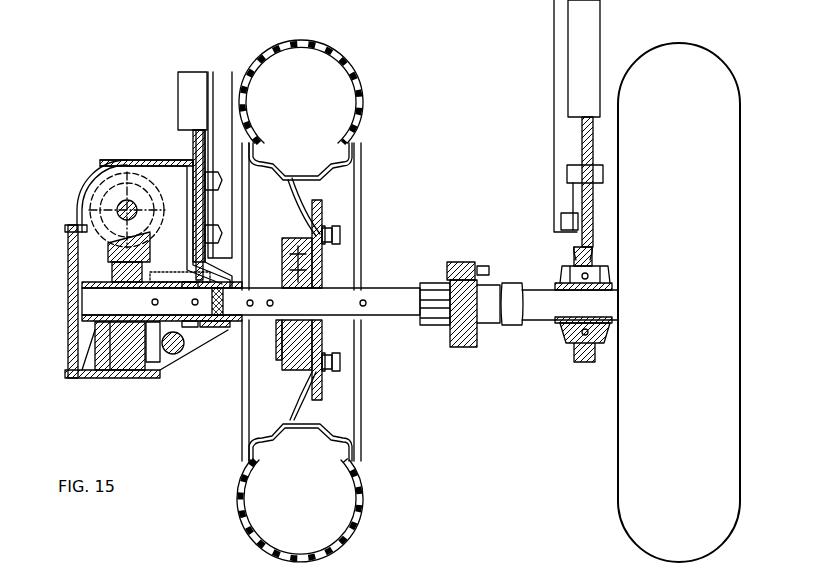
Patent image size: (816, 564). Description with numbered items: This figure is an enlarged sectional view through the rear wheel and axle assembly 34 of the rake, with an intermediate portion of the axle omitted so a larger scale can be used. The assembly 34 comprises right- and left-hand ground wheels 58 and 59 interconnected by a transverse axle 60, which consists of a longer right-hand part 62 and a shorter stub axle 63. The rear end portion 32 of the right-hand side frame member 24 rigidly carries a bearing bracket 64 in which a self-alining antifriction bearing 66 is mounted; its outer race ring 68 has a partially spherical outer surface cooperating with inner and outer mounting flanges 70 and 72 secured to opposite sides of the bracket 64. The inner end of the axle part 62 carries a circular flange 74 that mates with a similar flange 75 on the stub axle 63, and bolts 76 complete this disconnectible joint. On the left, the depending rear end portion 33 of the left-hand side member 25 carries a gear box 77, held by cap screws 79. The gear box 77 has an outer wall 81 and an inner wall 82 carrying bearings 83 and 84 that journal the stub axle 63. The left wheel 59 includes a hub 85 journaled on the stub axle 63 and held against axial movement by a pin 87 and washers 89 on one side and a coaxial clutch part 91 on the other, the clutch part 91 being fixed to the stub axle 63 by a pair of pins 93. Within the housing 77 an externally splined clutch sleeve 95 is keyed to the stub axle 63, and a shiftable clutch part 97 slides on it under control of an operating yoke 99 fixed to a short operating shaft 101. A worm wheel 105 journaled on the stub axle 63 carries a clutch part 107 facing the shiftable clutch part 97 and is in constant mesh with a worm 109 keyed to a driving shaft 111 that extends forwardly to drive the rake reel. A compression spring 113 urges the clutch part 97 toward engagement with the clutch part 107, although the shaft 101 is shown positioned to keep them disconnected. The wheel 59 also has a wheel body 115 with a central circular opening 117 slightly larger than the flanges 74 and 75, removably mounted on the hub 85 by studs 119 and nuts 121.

The right-hand side frame member 24 is at (554, 14).
The left-hand main frame side member 25 is at (186, 82).
The rear end portion 32 is at (600, 30).
The lower or depending rear end portion 33 is at (220, 82).
The wheel and axle assembly 34 is at (537, 468).
The right-hand ground wheel 58 is at (700, 548).
The left-hand ground wheel 59 is at (242, 506).
The transverse axle 60 is at (515, 330).
The right-hand axle part 62 is at (548, 320).
The stub axle 63 is at (386, 298).
The bearing bracket 64 is at (593, 200).
The self-alining antifriction bearing 66 is at (610, 272).
The outer race ring 68 is at (596, 350).
The inner mounting flange 70 is at (590, 258).
The outer mounting flange 72 is at (573, 260).
The circular flange or attaching element 74 is at (465, 347).
The flange 75 is at (465, 264).
The bolts 76 is at (447, 270).
The gear box 77 is at (100, 165).
The cap screws 79 is at (218, 232).
The left-hand or outer wall 81 is at (68, 297).
The inner or right-hand wall 82 is at (218, 322).
The bearing 83 is at (68, 335).
The bearing 84 is at (224, 327).
The hub 85 is at (322, 330).
The pin 87 is at (365, 306).
The washers 89 is at (282, 325).
The clutch part 91 is at (270, 306).
The pins 93 is at (251, 306).
The externally splined clutch sleeve 95 is at (190, 327).
The shiftable clutch part 97 is at (168, 280).
The operating yoke 99 is at (168, 352).
The operating shaft 101 is at (185, 356).
The worm wheel 105 is at (126, 360).
The clutch part 107 is at (160, 340).
The worm 109 is at (104, 200).
The driving shaft 111 is at (132, 200).
The compression spring 113 is at (200, 327).
The wheel body 115 is at (322, 190).
The central circular opening 117 is at (322, 265).
The studs 119 is at (340, 235).
The nuts 121 is at (325, 232).